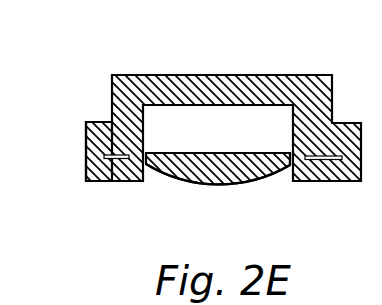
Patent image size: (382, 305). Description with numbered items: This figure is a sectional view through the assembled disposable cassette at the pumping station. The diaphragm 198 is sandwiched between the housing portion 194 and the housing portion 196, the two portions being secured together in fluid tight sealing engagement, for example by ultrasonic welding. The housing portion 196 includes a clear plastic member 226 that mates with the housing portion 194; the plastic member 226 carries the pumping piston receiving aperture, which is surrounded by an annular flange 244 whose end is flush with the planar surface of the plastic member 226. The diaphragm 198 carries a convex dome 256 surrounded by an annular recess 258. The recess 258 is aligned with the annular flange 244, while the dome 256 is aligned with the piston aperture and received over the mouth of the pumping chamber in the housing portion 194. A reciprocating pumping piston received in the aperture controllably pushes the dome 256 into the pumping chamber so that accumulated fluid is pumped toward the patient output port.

The housing portion 194 is at (248, 75).
The housing portion 196 is at (111, 181).
The annular flange 244 is at (149, 176).
The clear plastic member 226 is at (321, 178).
The diaphragm 198 is at (214, 186).
The convex dome 256 is at (219, 188).
The annular recess 258 is at (288, 170).